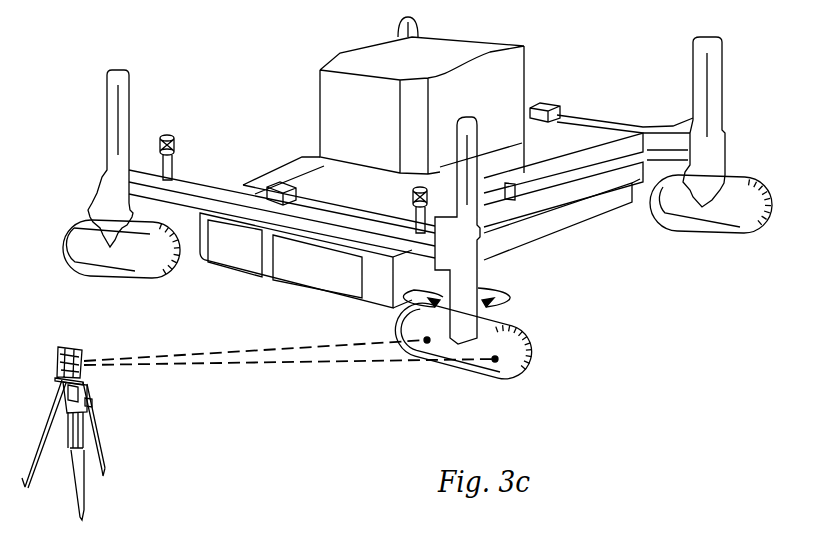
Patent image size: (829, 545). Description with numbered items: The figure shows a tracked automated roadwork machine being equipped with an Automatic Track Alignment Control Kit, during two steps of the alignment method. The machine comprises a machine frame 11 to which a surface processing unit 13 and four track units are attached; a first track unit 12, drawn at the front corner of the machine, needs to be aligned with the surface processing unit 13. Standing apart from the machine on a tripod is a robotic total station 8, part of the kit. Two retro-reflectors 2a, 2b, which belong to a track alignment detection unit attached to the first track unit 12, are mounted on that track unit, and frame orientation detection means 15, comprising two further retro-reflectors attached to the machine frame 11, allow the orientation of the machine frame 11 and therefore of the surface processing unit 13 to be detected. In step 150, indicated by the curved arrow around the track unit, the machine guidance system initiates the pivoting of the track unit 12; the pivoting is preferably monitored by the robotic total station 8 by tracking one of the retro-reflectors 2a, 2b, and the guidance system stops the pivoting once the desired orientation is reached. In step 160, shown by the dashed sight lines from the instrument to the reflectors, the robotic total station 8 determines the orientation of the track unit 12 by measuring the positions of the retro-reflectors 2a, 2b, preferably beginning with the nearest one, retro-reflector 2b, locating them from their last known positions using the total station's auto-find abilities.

The robotic total station 8 is at (108, 397).
The machine frame 11 is at (313, 208).
The first track unit 12 is at (548, 334).
The surface processing unit 13 is at (268, 275).
The frame orientation detection means 15 is at (413, 188).
The step of initiating pivoting 150 is at (507, 287).
The step of determining track unit orientation 160 is at (392, 361).
The retro-reflector 2a is at (495, 359).
The retro-reflector 2b is at (427, 340).